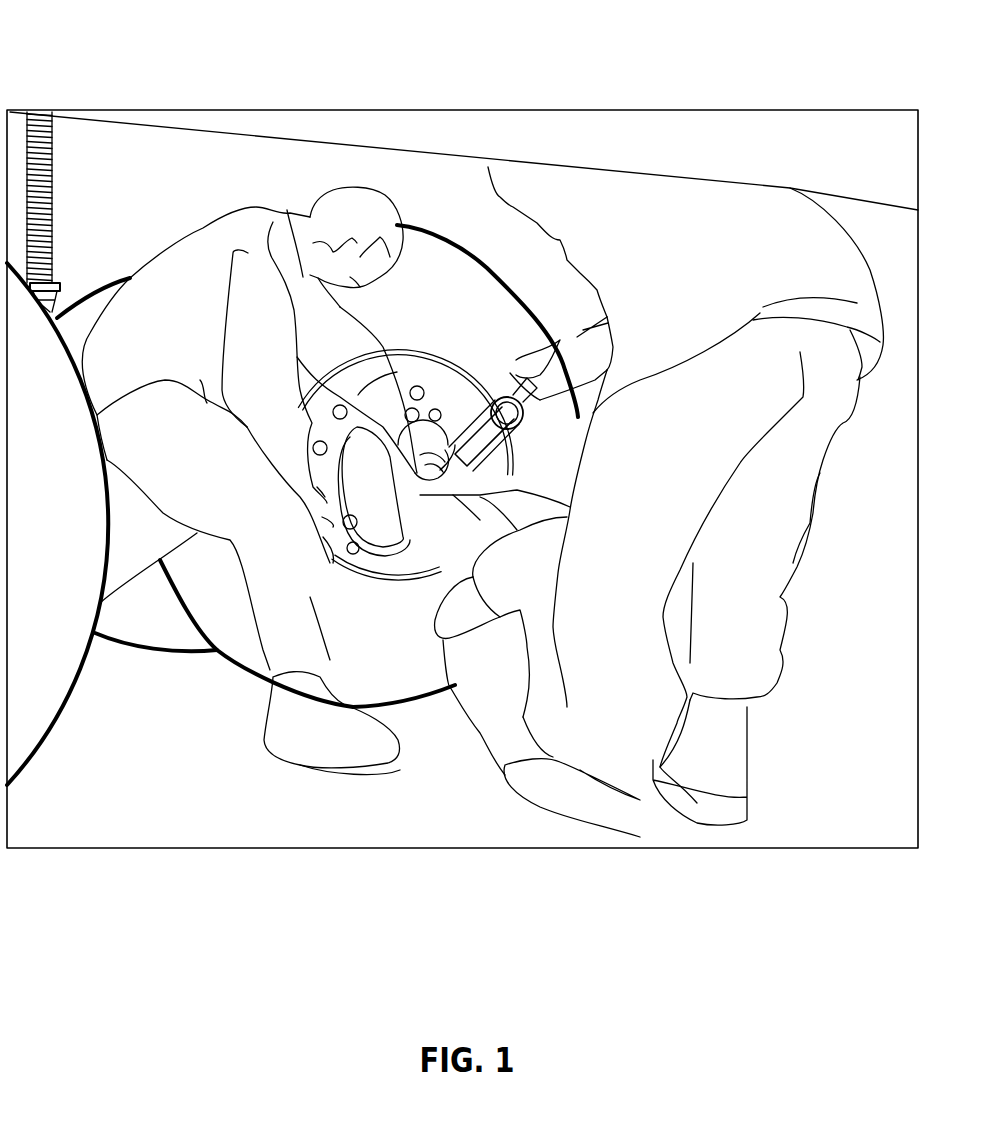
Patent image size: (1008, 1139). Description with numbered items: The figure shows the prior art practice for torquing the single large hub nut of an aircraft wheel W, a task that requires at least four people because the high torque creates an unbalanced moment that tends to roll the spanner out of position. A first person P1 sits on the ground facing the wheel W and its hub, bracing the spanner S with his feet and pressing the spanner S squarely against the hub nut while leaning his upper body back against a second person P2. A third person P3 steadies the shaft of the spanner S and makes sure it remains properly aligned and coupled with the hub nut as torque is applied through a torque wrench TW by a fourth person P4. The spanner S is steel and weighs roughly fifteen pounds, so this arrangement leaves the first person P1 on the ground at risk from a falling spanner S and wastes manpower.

The first person P1 is at (527, 573).
The second person P2 is at (713, 413).
The third person P3 is at (173, 313).
The fourth person P4 is at (583, 367).
The torque wrench TW is at (490, 437).
The wheel W is at (210, 587).
The spanner S is at (410, 500).